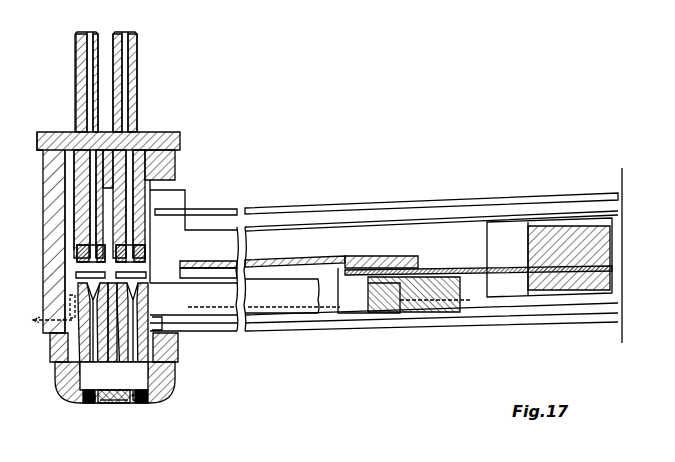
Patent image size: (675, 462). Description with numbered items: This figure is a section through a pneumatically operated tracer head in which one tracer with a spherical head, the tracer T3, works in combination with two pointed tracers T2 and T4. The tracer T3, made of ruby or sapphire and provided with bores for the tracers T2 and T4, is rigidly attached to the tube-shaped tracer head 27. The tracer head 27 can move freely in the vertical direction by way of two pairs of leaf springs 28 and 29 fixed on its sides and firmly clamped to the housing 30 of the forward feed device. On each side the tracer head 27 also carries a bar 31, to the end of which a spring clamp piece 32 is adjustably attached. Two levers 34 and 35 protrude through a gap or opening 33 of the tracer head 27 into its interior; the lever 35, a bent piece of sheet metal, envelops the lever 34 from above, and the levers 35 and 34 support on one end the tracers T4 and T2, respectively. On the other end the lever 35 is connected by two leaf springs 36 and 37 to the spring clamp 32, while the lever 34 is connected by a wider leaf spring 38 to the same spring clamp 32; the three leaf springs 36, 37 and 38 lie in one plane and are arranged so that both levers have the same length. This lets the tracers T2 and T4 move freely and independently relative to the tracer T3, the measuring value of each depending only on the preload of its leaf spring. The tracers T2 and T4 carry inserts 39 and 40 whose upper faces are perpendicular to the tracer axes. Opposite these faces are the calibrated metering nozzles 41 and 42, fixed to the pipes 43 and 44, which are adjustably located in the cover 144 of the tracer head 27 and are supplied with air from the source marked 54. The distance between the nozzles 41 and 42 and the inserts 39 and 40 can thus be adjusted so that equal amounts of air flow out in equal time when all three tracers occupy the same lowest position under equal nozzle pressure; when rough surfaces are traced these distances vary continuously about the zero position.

The supply line source 54 is at (85, 14).
The pipe 44 is at (150, 132).
The cover 144 is at (60, 133).
The pipe 43 is at (82, 206).
The metering nozzle 41 is at (80, 252).
The metering nozzle 42 is at (143, 236).
The insert 39 is at (80, 263).
The insert 40 is at (147, 270).
The gap or opening 33 is at (160, 190).
The tracer head 27 is at (58, 292).
The leaf spring 36 is at (52, 360).
The lever 34 is at (175, 307).
The pointed tracer T2 is at (88, 398).
The spherical-head tracer T3 is at (115, 404).
The pointed tracer T4 is at (140, 398).
The pair of leaf springs 28 is at (313, 213).
The pair of leaf springs 29 is at (298, 328).
The lever 35 is at (268, 262).
The bar 31 is at (342, 240).
The leaf spring 37 is at (373, 262).
The leaf spring 38 is at (497, 270).
The spring clamp piece 32 is at (555, 240).
The housing 30 is at (620, 184).